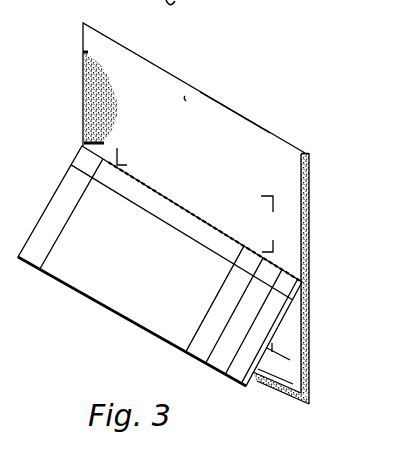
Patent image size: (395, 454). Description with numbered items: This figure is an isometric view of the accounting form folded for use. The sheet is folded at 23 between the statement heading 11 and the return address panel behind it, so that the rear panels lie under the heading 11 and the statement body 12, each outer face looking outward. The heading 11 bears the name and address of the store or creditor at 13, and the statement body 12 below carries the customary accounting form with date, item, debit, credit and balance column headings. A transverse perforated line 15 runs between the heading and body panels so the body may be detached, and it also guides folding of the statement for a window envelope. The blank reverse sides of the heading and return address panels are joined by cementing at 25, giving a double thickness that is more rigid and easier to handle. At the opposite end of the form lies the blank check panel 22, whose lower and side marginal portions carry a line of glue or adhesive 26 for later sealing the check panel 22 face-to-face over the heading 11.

The statement heading 11 is at (283, 177).
The statement body 12 is at (88, 289).
The name and address of the store 13 is at (185, 101).
The transverse perforated line 15 is at (284, 267).
The blank check panel 22 is at (288, 345).
The fold 23 is at (265, 129).
The cementing 25 is at (309, 211).
The line of glue or adhesive 26 is at (307, 376).